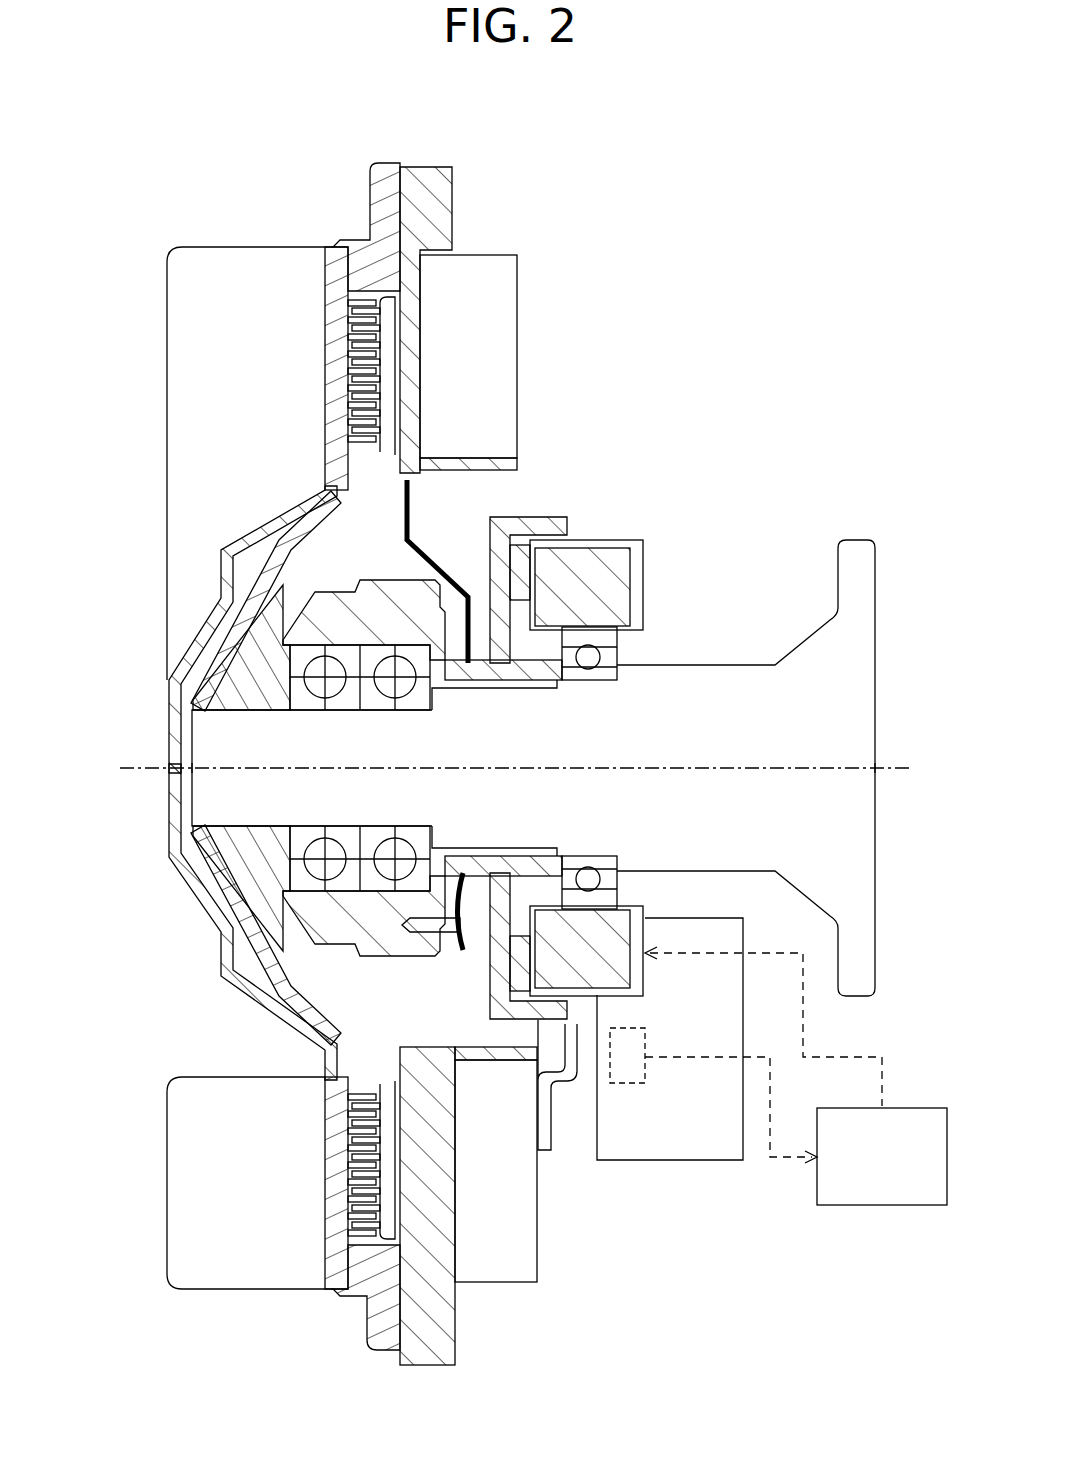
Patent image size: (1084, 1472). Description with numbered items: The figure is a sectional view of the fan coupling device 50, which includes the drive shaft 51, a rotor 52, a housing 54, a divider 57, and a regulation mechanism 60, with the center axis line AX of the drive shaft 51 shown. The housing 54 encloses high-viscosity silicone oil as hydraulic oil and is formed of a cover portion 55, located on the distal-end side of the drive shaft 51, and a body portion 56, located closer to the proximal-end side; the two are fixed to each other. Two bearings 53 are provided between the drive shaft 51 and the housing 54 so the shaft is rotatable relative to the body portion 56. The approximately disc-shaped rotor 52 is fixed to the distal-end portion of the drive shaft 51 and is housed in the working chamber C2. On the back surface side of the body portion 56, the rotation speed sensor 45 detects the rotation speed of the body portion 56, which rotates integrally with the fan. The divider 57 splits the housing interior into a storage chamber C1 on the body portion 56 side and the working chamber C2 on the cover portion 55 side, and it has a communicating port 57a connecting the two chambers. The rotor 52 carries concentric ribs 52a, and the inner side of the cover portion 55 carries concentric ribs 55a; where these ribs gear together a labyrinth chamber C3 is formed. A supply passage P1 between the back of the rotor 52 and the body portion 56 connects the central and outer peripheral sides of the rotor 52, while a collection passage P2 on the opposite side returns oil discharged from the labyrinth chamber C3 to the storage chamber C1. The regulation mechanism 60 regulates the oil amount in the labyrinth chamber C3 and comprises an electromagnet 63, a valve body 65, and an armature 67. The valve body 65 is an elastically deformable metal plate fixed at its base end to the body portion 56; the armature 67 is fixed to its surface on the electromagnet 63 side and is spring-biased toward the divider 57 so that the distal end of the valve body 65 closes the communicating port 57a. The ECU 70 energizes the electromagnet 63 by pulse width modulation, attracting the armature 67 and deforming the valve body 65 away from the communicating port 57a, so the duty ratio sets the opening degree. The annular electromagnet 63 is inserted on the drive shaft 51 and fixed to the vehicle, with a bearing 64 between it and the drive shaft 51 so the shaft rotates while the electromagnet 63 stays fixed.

The rotation speed sensor 45 is at (620, 1083).
The fan coupling device 50 is at (645, 358).
The drive shaft 51 is at (733, 667).
The rotor 52 is at (252, 548).
The ribs 52a is at (357, 315).
The bearings 53 is at (283, 652).
The housing 54 is at (283, 118).
The cover portion 55 is at (372, 165).
The ribs 55a is at (348, 343).
The body portion 56 is at (415, 167).
The divider 57 is at (366, 540).
The communicating port 57a is at (407, 476).
The regulation mechanism 60 is at (717, 513).
The electromagnet 63 is at (643, 567).
The bearing 64 is at (600, 642).
The valve body 65 is at (435, 548).
The armature 67 is at (500, 640).
The ECU 70 is at (925, 1108).
The center axis line AX is at (535, 769).
The storage chamber C1 is at (457, 492).
The working chamber C2 is at (372, 528).
The labyrinth chamber C3 is at (96, 297).
The supply passage P1 is at (400, 313).
The collection passage P2 is at (400, 1100).